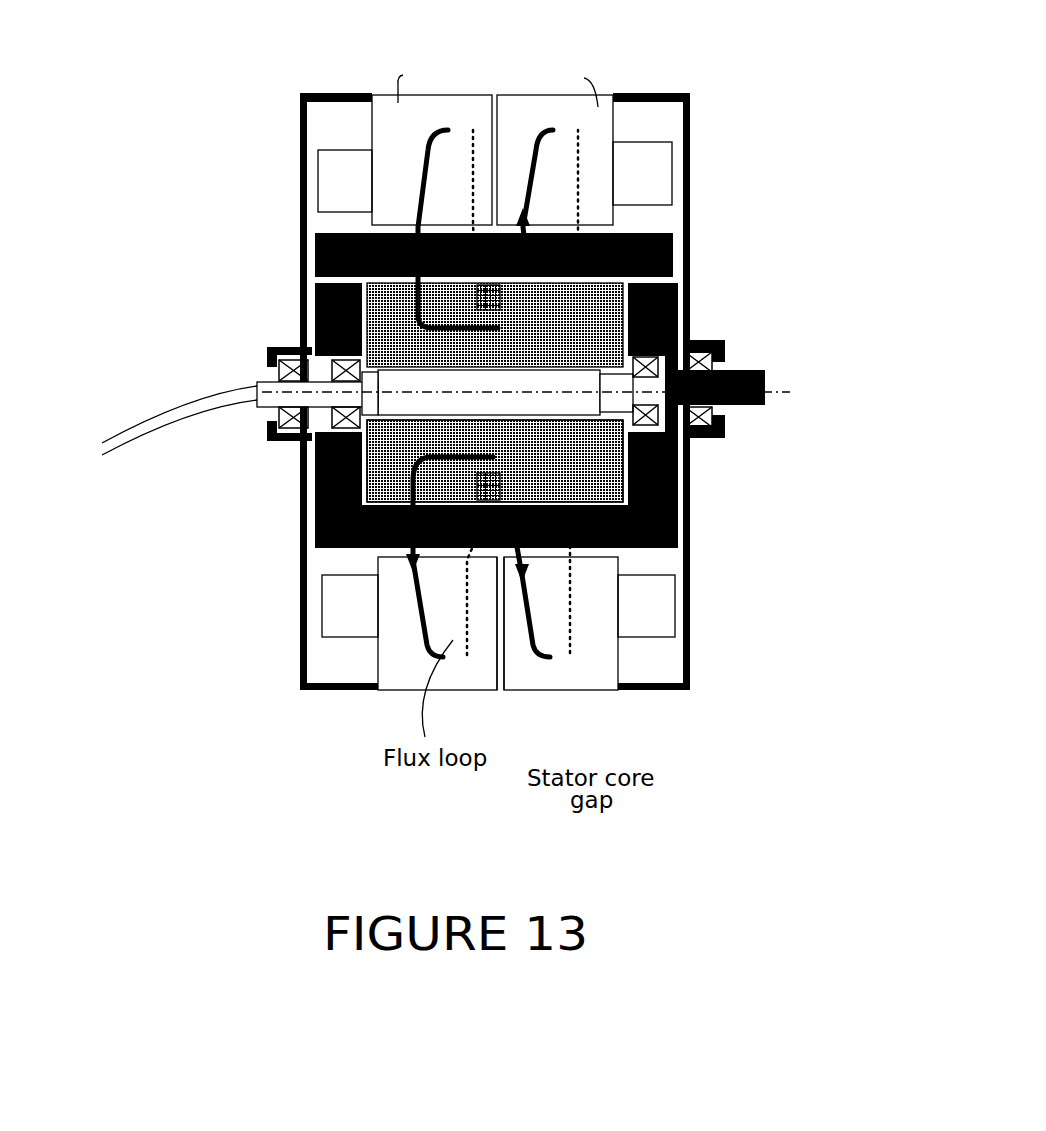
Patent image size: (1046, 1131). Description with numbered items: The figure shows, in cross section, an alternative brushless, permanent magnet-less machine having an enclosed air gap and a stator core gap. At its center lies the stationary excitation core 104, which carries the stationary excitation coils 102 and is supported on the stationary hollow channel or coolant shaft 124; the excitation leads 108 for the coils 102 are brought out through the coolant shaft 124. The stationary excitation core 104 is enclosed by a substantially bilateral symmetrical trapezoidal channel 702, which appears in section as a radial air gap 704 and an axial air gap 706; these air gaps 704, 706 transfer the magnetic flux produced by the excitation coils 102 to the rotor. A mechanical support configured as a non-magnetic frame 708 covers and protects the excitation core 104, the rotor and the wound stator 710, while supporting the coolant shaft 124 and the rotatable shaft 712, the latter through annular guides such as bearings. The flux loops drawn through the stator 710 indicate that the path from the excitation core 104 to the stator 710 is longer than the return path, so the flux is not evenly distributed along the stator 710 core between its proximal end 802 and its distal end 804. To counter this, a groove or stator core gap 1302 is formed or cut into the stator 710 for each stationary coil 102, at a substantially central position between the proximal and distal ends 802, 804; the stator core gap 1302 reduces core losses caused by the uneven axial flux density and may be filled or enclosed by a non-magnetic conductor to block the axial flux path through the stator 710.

The coils 102 is at (377, 490).
The stationary excitation core 104 is at (678, 437).
The excitation leads 108 is at (149, 425).
The coolant shaft 124 is at (268, 380).
The trapezoidal channel 702 is at (365, 302).
The radial air gap 704 is at (678, 463).
The axial air gap 706 is at (678, 517).
The frame 708 is at (689, 187).
The stator 710 is at (598, 107).
The rotatable shaft 712 is at (752, 370).
The proximal end of the stator 802 is at (375, 662).
The distal end of the stator 804 is at (618, 662).
The stator core gap 1302 is at (503, 663).